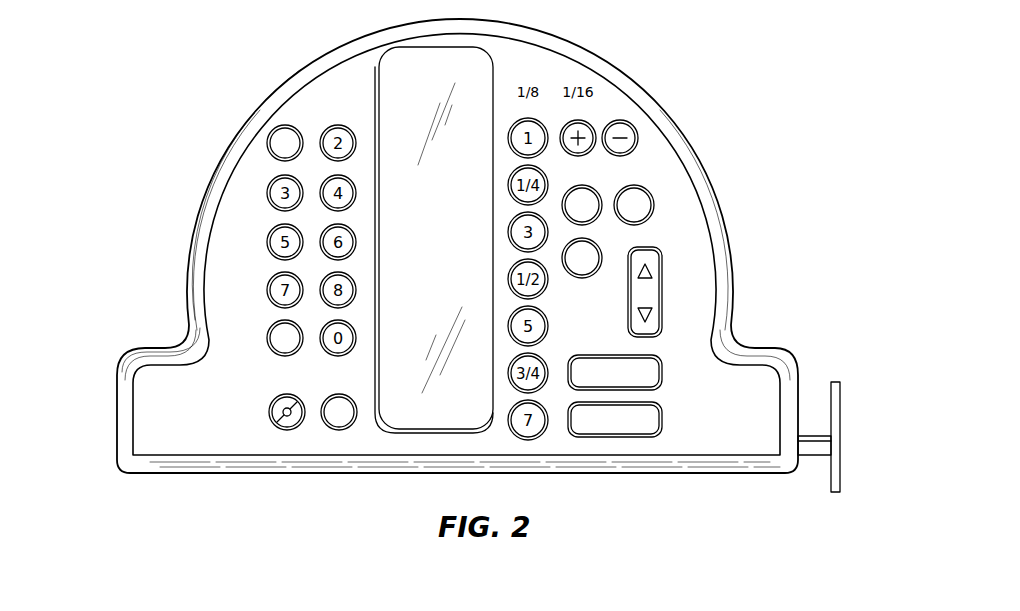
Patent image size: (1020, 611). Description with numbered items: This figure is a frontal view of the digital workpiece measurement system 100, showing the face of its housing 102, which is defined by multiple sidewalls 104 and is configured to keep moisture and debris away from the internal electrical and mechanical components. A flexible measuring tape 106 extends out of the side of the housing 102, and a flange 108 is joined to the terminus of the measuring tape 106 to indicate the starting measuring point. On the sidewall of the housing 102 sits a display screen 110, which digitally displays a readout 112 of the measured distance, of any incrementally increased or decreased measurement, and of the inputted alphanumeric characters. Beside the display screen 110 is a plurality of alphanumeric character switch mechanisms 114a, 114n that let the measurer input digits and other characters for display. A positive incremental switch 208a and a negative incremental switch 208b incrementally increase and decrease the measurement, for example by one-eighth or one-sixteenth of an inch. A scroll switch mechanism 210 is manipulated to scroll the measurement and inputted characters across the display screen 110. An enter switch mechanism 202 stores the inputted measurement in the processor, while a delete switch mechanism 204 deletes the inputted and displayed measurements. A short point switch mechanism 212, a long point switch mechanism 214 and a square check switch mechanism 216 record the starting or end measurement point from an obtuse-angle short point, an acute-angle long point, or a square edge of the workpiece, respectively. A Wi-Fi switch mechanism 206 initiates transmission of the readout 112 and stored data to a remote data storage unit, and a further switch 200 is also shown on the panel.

The digital workpiece measurement system 100 is at (118, 57).
The housing 102 is at (137, 476).
The sidewalls 104 is at (155, 415).
The flexible measuring tape 106 is at (814, 447).
The flange 108 is at (838, 418).
The display screen 110 is at (410, 123).
The readout 112 is at (432, 263).
The alphanumeric character switch mechanism 114a is at (268, 140).
The alphanumeric character switch mechanism 114n is at (279, 352).
The phone key 200 is at (286, 430).
The enter switch mechanism 202 is at (663, 372).
The delete switch mechanism 204 is at (663, 420).
The Wi-Fi switch mechanism 206 is at (338, 430).
The positive incremental switch 208a is at (583, 120).
The negative incremental switch 208b is at (638, 138).
The scroll switch mechanism 210 is at (657, 302).
The short point switch mechanism 212 is at (598, 188).
The long point switch mechanism 214 is at (655, 208).
The square check switch mechanism 216 is at (585, 278).